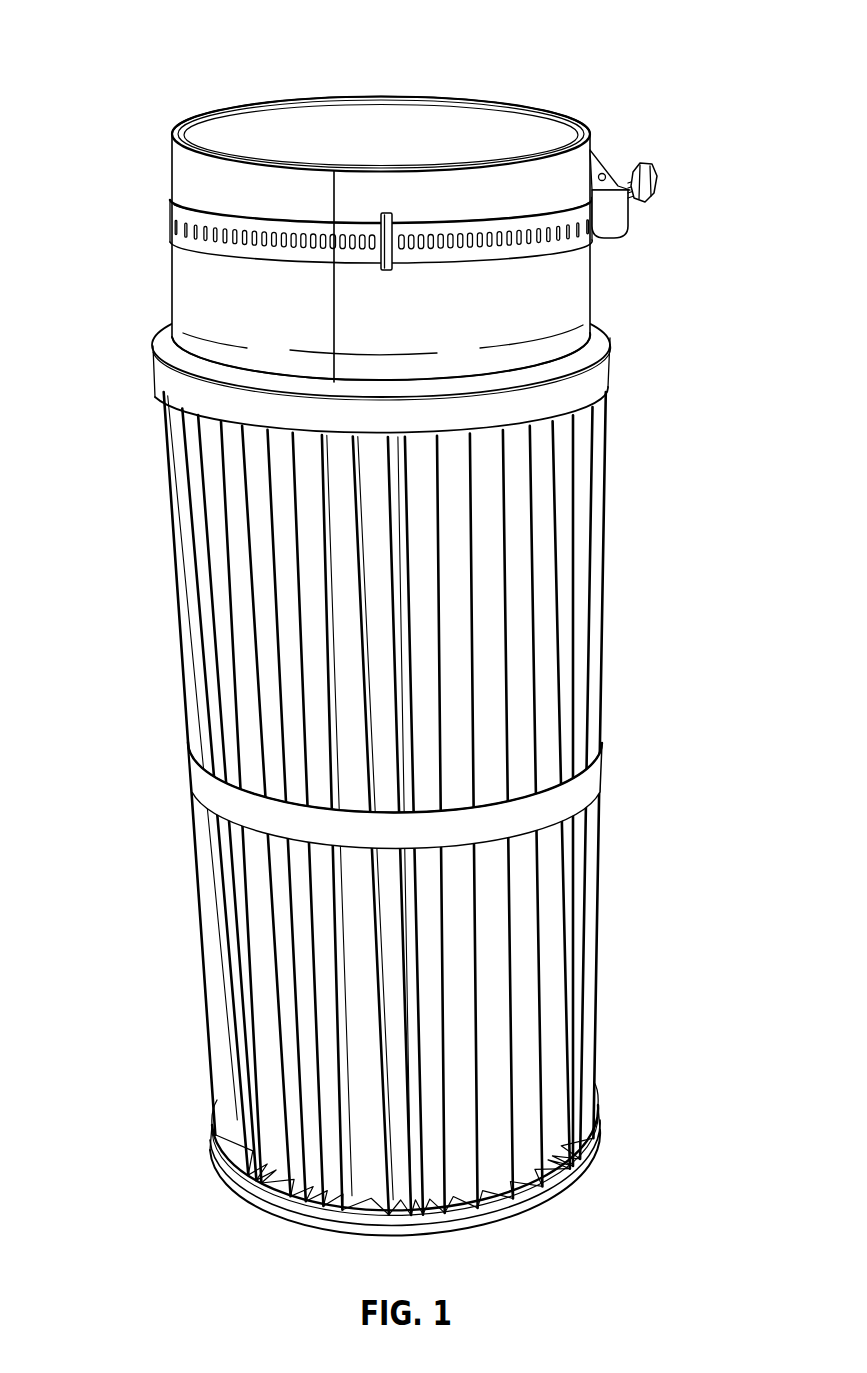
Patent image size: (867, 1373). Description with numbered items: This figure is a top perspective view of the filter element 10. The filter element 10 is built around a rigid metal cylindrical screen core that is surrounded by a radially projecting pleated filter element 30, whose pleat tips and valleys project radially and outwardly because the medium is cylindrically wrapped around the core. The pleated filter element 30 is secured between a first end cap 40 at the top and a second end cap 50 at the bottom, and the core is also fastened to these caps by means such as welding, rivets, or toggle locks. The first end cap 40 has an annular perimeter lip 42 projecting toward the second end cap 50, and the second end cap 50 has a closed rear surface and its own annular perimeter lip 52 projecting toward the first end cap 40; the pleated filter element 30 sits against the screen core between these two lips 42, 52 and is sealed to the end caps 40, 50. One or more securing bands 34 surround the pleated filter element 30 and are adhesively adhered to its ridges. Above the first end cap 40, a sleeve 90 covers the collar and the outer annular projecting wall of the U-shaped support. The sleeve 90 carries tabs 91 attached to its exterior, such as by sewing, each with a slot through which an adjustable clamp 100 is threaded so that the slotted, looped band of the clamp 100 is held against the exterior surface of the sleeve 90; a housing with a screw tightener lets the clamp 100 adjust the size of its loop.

The filter element 10 is at (108, 50).
The pleated filter element 30 is at (584, 560).
The securing band 34 is at (211, 787).
The first end cap 40 is at (390, 363).
The annular perimeter lip 42 is at (616, 348).
The second end cap 50 is at (440, 1175).
The annular perimeter lip 52 is at (592, 1148).
The sleeve 90 is at (188, 172).
The tab 91 is at (386, 272).
The adjustable clamp 100 is at (182, 243).